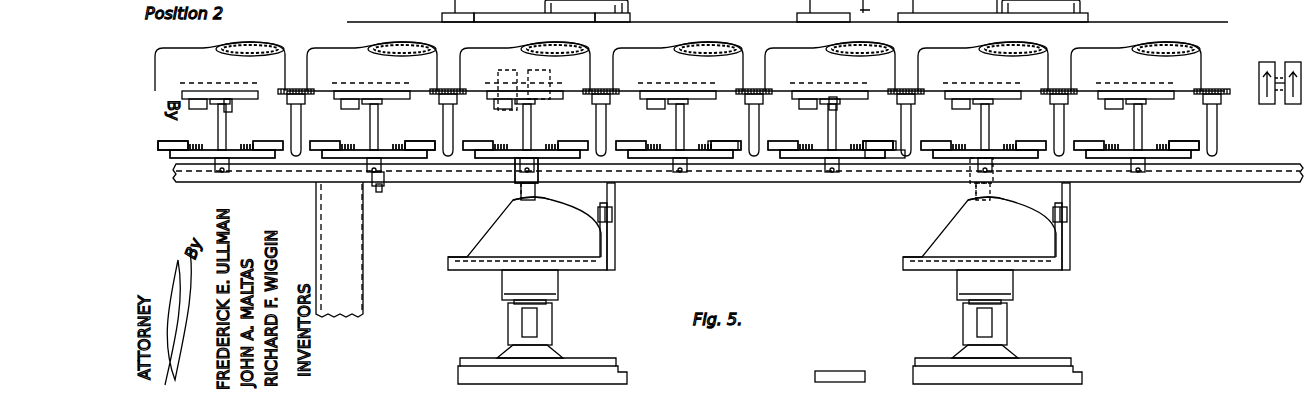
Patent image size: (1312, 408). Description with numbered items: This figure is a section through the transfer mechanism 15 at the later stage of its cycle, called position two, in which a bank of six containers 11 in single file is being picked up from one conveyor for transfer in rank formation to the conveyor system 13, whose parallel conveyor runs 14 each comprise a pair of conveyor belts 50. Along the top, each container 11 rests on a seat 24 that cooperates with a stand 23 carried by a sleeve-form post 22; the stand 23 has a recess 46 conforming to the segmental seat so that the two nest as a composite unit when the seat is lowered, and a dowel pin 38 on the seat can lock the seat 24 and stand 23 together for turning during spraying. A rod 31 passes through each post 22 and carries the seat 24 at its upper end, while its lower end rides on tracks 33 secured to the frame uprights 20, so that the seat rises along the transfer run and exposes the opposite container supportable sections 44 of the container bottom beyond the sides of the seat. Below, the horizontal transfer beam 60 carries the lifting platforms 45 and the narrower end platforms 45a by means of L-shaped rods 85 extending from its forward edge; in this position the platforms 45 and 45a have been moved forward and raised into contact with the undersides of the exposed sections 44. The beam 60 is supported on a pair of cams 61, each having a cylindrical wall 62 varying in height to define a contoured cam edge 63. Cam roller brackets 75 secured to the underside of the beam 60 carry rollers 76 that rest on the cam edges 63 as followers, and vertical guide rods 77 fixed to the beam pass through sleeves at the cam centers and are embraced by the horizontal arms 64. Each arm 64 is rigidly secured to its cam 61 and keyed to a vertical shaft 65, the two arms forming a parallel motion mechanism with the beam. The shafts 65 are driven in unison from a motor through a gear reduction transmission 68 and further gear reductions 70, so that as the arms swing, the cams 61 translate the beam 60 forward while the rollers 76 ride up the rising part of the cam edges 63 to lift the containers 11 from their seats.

The container 11 is at (180, 58).
The conveyor system 13 is at (1278, 123).
The conveyor run 14 is at (1281, 54).
The transfer mechanism 15 is at (1228, 168).
The frame upright 20 is at (355, 292).
The post 22 is at (215, 175).
The stand 23 is at (165, 154).
The seat 24 is at (233, 91).
The rod 31 is at (224, 128).
The track 33 is at (513, 168).
The dowel pin 38 is at (232, 110).
The container supportable section 44 is at (185, 91).
The lifting platform 45 is at (296, 88).
The lifting platform 45a is at (1212, 88).
The recess 46 is at (172, 148).
The conveyor belt 50 is at (530, 105).
The transfer beam 60 is at (720, 152).
The cam 61 is at (610, 262).
The cylindrical wall 62 is at (485, 226).
The cam edge 63 is at (582, 203).
The horizontal arm 64 is at (510, 292).
The vertical shaft 65 is at (545, 345).
The gear reduction transmission 68 is at (838, 372).
The gear reduction 70 is at (605, 358).
The cam roller bracket 75 is at (614, 210).
The roller 76 is at (610, 218).
The vertical guide rod 77 is at (380, 192).
The L-shaped rod 85 is at (892, 160).